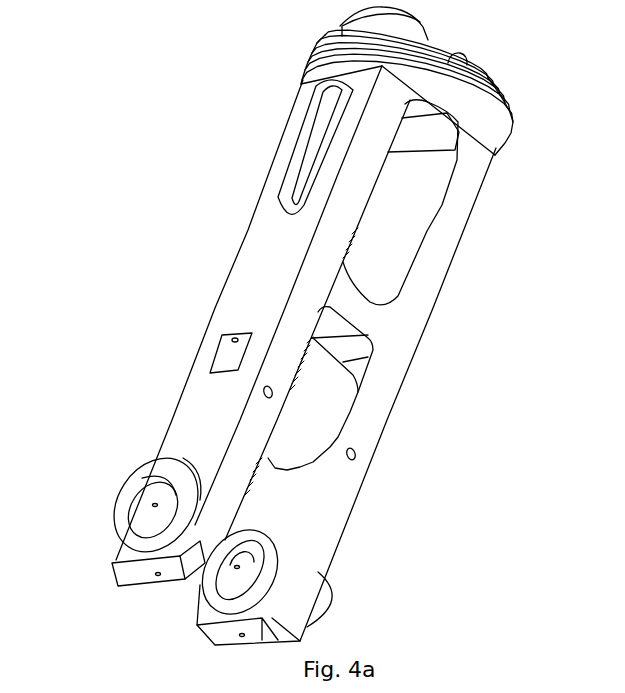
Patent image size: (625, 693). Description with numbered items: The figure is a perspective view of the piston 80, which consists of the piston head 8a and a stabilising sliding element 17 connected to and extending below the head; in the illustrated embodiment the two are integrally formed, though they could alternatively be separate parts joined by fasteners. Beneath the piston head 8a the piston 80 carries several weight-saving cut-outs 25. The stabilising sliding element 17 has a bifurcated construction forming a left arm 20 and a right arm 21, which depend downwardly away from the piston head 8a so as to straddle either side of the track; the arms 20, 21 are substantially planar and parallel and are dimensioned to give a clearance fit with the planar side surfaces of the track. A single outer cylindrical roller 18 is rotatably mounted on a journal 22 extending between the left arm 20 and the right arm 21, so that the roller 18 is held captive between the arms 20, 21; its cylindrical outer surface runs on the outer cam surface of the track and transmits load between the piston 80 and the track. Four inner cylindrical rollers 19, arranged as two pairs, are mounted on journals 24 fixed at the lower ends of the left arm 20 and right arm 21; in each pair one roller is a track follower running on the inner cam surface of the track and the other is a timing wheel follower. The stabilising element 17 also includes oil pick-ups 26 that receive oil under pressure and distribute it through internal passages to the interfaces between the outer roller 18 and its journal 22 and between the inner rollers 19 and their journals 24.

The piston head 8a is at (483, 125).
The weight-saving cut-outs 25 is at (395, 230).
The piston 80 is at (417, 312).
The journal 22 is at (223, 350).
The oil pick-ups 26 is at (265, 391).
The outer cylindrical roller 18 is at (323, 410).
The stabilising sliding element 17 is at (368, 430).
The left arm 20 is at (225, 482).
The journal 24 is at (140, 508).
The inner cylindrical rollers 19 is at (123, 537).
The right arm 21 is at (323, 517).